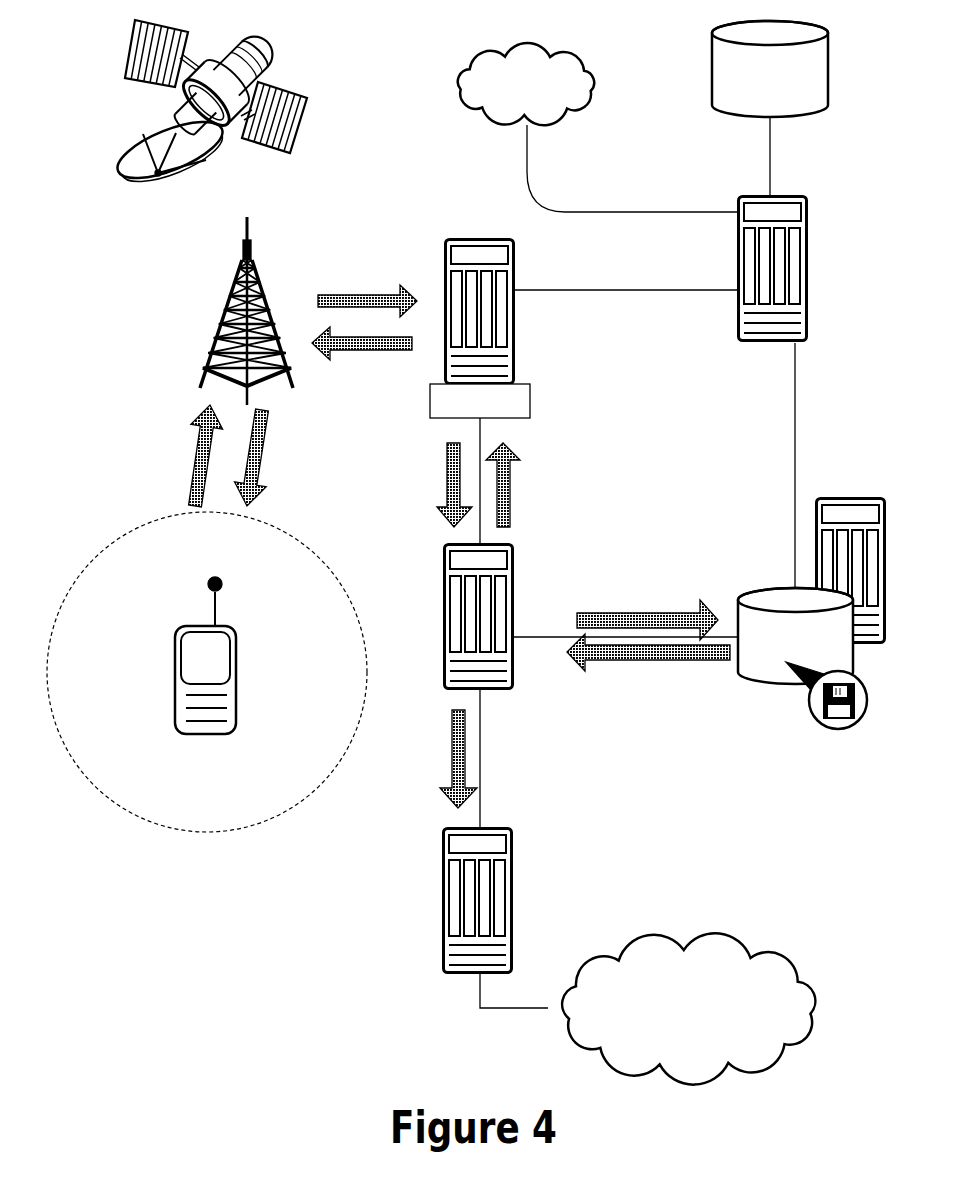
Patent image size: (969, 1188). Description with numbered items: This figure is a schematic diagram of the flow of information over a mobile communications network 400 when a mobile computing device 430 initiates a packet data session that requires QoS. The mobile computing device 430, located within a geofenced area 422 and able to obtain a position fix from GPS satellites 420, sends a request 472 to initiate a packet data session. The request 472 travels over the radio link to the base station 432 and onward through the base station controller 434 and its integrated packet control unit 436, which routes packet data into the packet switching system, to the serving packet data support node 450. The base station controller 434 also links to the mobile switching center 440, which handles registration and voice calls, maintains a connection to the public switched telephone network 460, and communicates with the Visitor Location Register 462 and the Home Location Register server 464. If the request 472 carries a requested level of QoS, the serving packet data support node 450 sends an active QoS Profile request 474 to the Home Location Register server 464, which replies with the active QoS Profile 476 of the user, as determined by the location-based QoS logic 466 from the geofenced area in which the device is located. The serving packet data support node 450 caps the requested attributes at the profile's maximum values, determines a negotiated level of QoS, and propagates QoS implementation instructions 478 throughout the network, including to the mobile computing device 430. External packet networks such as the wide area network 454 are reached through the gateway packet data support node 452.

The mobile communications network 400 is at (237, 1037).
The GPS satellites 420 is at (183, 175).
The geofenced area 422 is at (210, 833).
The mobile computing device 430 is at (223, 736).
The base station 432 is at (223, 317).
The base station controller 434 is at (515, 337).
The packet control unit 436 is at (462, 417).
The mobile switching center 440 is at (772, 202).
The serving packet data support node 450 is at (513, 582).
The gateway packet data support node 452 is at (507, 848).
The wide area network 454 is at (552, 1038).
The public switched telephone network 460 is at (542, 55).
The Visitor Location Register 462 is at (708, 103).
The Home Location Register server 464 is at (762, 583).
The location-based QoS logic 466 is at (827, 728).
The request 472 is at (348, 297).
The active QoS Profile request 474 is at (628, 615).
The active QoS Profile 476 is at (645, 655).
The QoS implementation instructions 478 is at (398, 343).